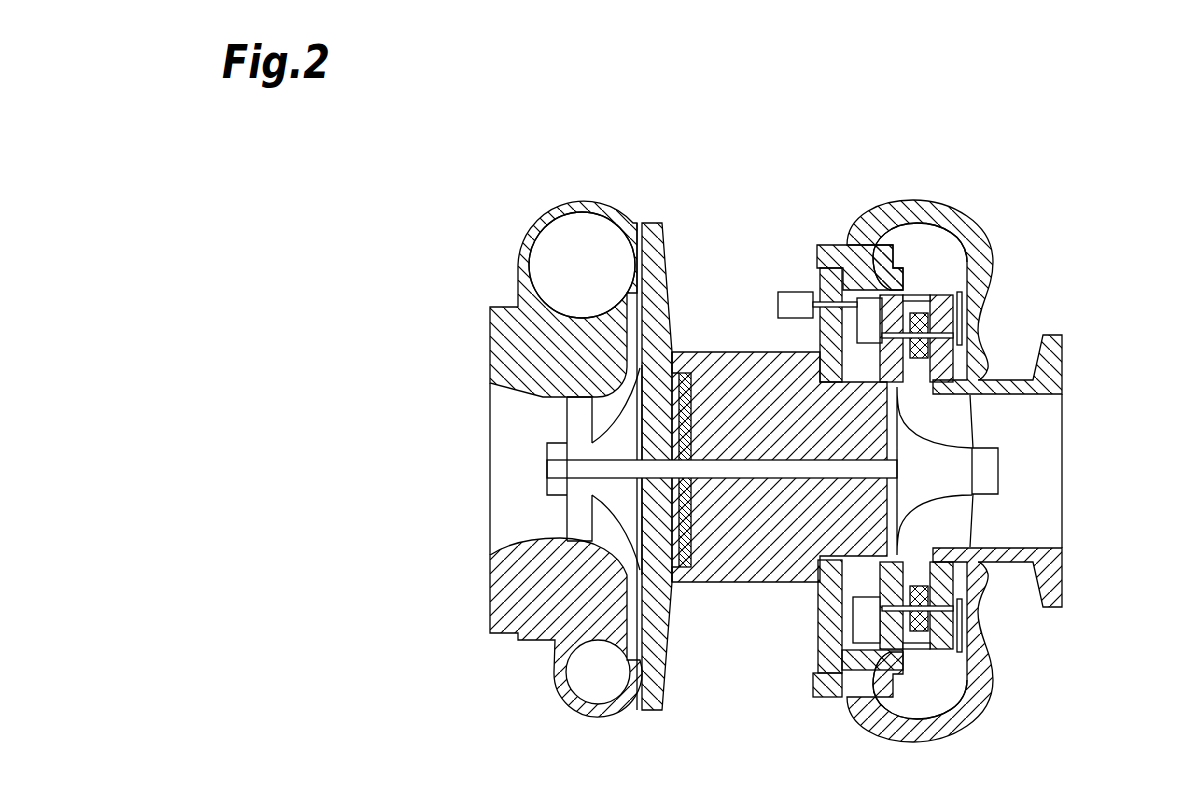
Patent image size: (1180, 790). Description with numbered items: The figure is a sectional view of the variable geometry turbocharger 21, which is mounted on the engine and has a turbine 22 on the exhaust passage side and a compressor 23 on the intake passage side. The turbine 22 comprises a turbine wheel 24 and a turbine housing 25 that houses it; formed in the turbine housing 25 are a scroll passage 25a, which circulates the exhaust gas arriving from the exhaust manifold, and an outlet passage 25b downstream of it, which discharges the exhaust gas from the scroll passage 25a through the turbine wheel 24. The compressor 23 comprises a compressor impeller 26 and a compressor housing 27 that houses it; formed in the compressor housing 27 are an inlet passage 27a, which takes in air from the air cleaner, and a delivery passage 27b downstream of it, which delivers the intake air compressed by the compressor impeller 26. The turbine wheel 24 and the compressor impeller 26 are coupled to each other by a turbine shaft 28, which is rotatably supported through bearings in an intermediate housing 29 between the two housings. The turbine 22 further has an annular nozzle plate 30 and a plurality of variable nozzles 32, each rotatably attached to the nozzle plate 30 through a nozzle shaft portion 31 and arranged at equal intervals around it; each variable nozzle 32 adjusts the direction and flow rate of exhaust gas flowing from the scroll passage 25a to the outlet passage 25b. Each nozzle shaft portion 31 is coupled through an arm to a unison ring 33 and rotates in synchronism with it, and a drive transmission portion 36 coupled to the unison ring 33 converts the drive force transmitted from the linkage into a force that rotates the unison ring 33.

The variable geometry turbocharger 21 is at (681, 144).
The turbine 22 is at (978, 219).
The compressor 23 is at (533, 219).
The turbine wheel 24 is at (990, 467).
The turbine housing 25 is at (983, 267).
The scroll passage 25a is at (928, 242).
The outlet passage 25b is at (1038, 508).
The compressor impeller 26 is at (553, 455).
The compressor housing 27 is at (500, 345).
The inlet passage 27a is at (507, 507).
The delivery passage 27b is at (585, 240).
The turbine shaft 28 is at (692, 567).
The intermediate housing 29 is at (738, 567).
The annular nozzle plate 30 is at (900, 298).
The nozzle shaft portion 31 is at (950, 350).
The variable nozzle 32 is at (923, 325).
The unison ring 33 is at (867, 625).
The drive transmission portion 36 is at (778, 305).